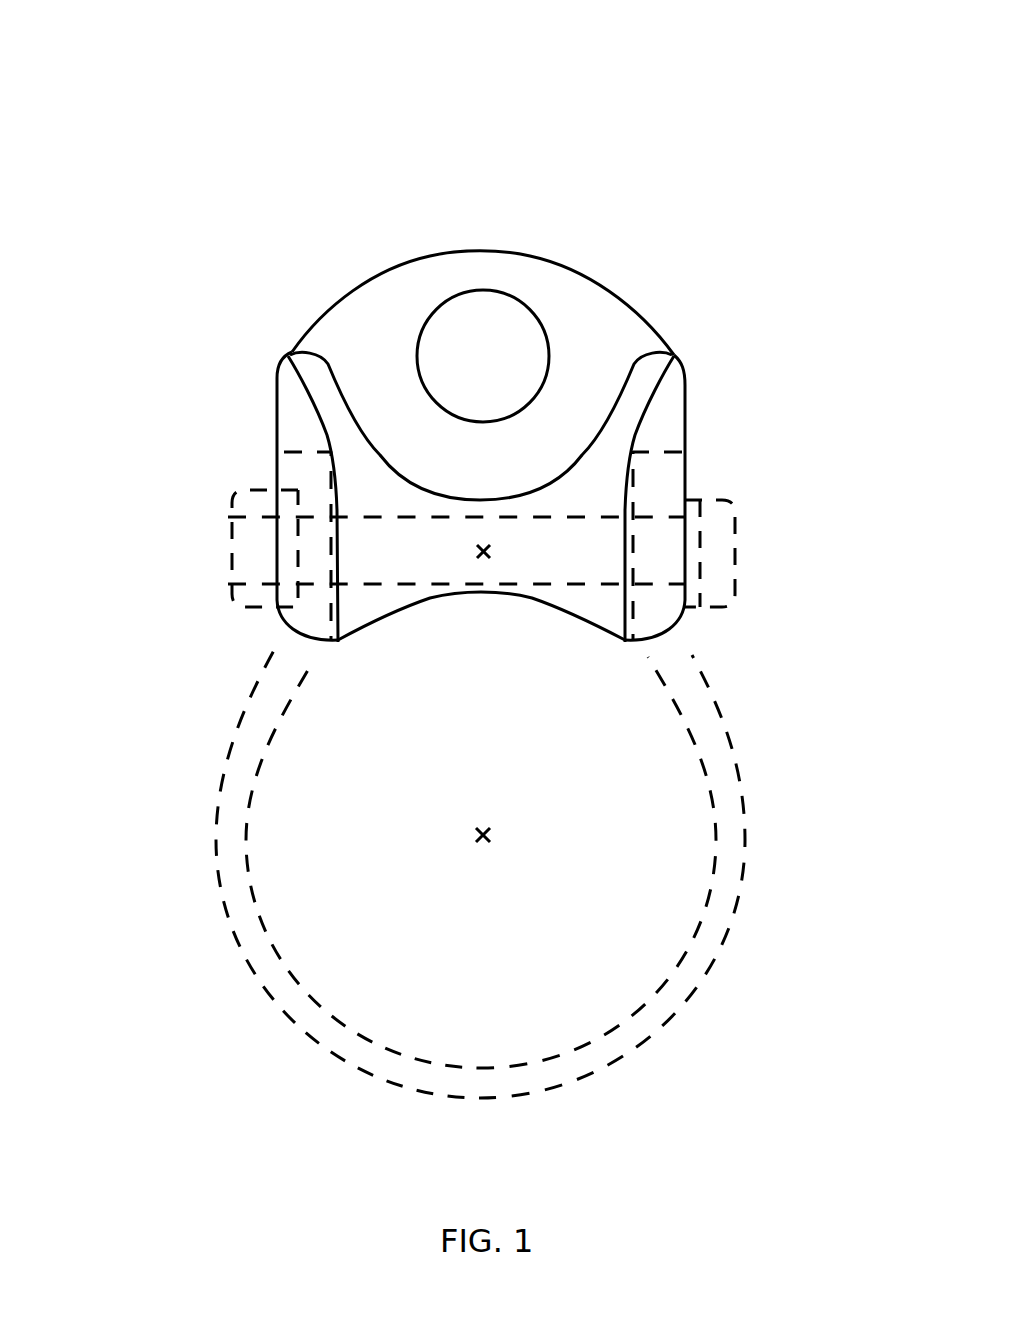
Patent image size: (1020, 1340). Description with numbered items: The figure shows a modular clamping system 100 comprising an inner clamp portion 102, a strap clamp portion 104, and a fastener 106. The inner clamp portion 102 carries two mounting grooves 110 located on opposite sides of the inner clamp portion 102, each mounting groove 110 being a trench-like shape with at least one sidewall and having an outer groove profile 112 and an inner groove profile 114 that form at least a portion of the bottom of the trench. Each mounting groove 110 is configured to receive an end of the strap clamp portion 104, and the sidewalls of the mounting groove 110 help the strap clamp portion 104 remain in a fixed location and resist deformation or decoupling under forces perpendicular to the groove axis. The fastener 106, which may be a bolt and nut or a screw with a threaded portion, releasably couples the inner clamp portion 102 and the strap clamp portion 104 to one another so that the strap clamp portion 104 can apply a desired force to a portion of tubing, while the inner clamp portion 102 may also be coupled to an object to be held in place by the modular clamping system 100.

The modular clamping system 100 is at (373, 105).
The inner clamp portion 102 is at (312, 382).
The strap clamp portion 104 is at (237, 914).
The fastener 106 is at (238, 567).
The mounting groove 110 is at (283, 421).
The outer groove profile 112 is at (652, 442).
The inner groove profile 114 is at (643, 606).